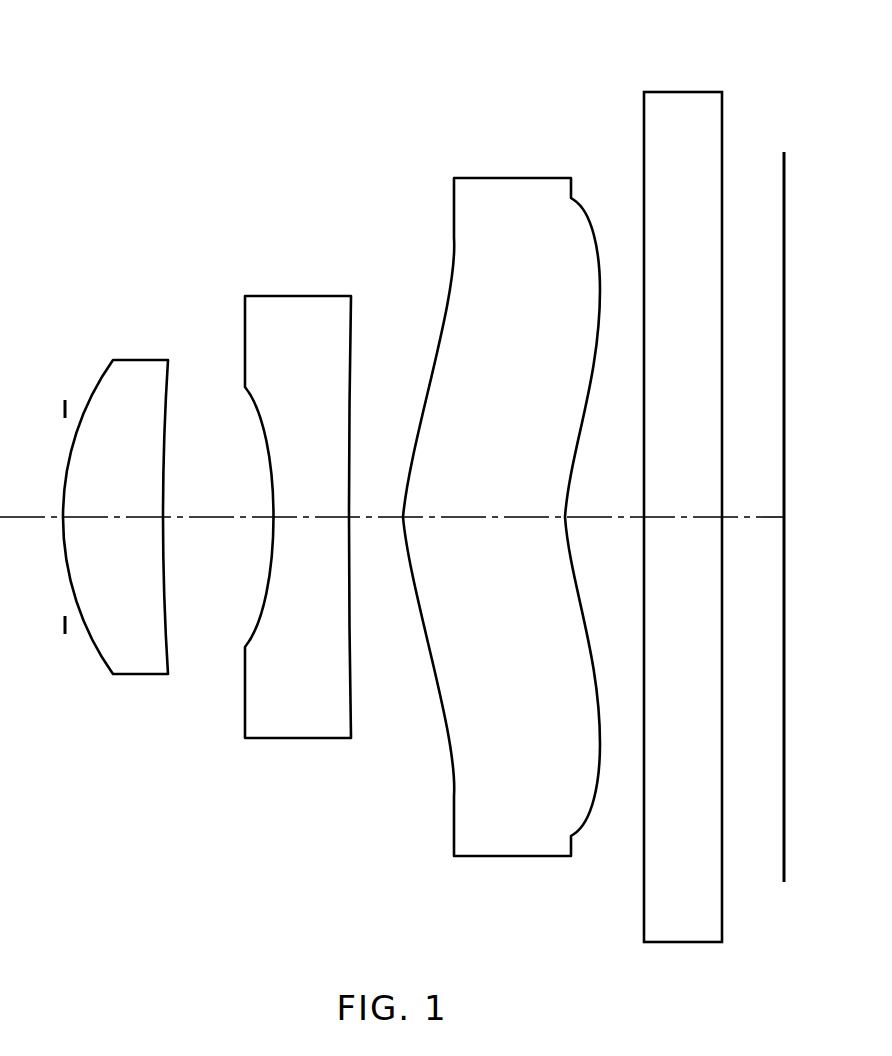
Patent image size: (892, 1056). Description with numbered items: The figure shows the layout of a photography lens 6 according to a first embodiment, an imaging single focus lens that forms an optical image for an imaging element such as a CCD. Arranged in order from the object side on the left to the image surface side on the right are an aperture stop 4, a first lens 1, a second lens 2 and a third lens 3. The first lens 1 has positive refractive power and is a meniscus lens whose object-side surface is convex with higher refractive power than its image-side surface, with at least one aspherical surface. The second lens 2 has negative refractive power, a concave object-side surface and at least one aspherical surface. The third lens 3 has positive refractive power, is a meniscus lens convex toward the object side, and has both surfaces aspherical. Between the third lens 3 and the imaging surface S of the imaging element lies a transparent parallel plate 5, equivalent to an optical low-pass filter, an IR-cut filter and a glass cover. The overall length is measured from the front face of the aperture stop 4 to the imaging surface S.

The first lens 1 is at (140, 358).
The second lens 2 is at (298, 294).
The third lens 3 is at (511, 176).
The aperture stop 4 is at (63, 400).
The parallel plate 5 is at (680, 92).
The photography lens 6 is at (368, 178).
The imaging surface S is at (786, 257).